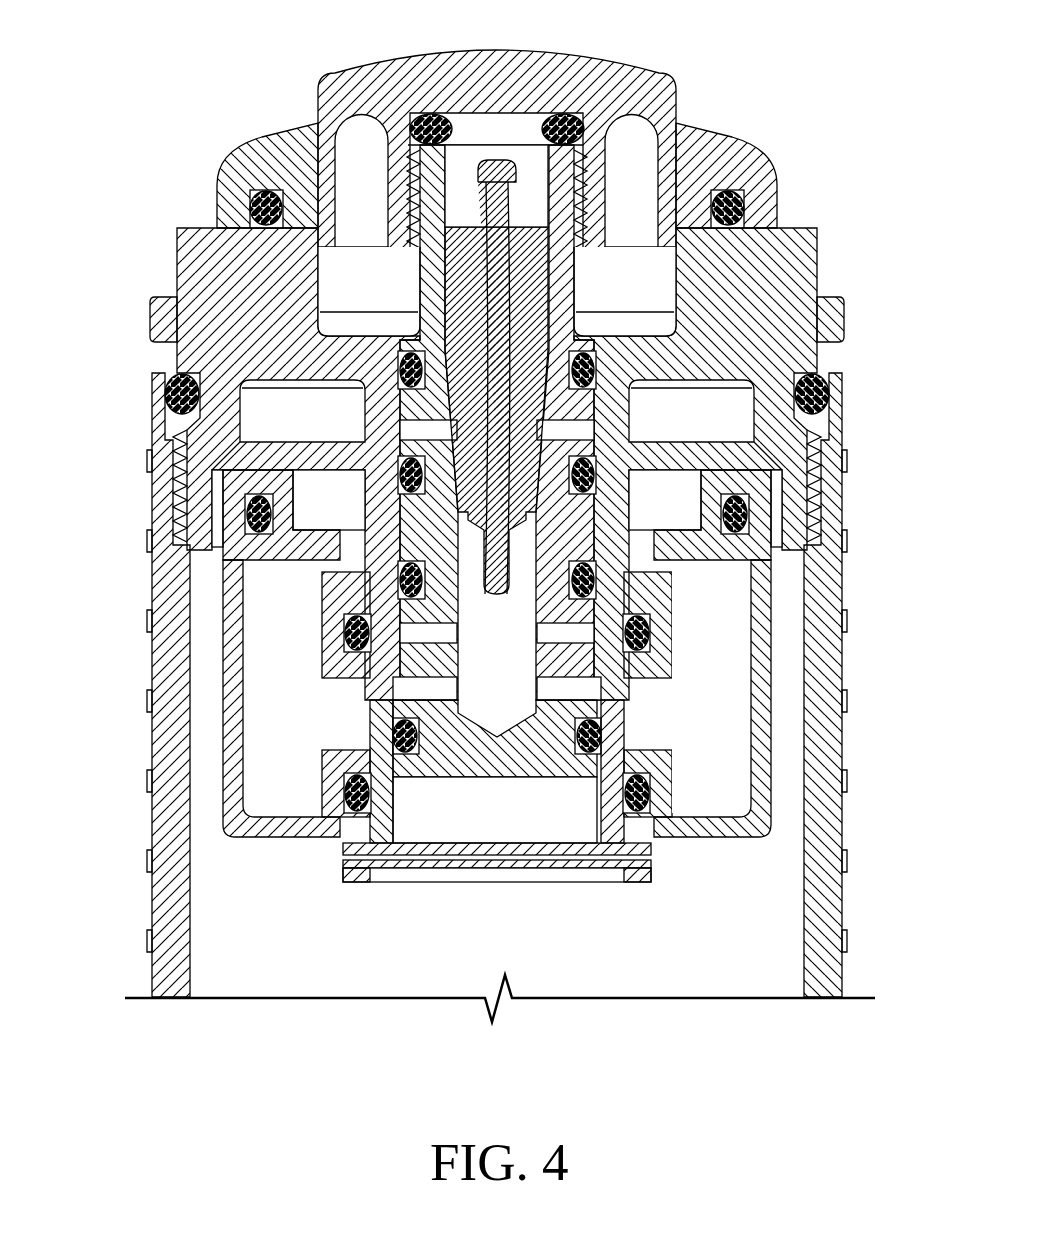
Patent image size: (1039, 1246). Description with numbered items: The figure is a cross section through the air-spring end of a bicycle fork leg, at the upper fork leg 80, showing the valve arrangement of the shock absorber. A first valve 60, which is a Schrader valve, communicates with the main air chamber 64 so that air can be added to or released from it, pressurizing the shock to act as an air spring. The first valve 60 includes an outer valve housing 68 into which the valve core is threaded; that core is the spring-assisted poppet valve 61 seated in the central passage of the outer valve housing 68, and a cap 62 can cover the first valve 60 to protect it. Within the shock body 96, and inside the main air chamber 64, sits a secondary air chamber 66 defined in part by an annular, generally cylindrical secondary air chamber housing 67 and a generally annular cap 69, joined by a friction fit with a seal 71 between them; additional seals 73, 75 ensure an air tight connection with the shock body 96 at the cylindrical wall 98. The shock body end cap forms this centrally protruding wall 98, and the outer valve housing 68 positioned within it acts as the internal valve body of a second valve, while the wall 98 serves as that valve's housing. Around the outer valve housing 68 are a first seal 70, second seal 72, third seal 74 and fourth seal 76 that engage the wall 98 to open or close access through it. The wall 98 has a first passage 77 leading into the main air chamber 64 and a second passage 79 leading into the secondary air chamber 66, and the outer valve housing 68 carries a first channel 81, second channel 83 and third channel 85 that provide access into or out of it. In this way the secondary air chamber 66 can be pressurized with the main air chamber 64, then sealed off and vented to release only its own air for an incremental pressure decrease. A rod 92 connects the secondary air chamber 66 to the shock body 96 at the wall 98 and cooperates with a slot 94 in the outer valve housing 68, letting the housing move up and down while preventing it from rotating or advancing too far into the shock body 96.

The first valve 60 is at (491, 133).
The poppet valve 61 is at (697, 200).
The cap 62 is at (640, 95).
The main air chamber 64 is at (326, 949).
The secondary air chamber 66 is at (737, 767).
The secondary air chamber housing 67 is at (760, 670).
The outer valve housing 68 is at (432, 298).
The annular cap 69 is at (257, 480).
The first seal 70 is at (658, 372).
The seal 71 is at (248, 520).
The second seal 72 is at (745, 432).
The seal 73 is at (398, 700).
The third seal 74 is at (770, 537).
The seal 75 is at (372, 692).
The fourth seal 76 is at (585, 738).
The first passage 77 is at (388, 580).
The second passage 79 is at (430, 735).
The upper fork leg 80 is at (165, 828).
The first channel 81 is at (420, 428).
The second channel 83 is at (425, 635).
The third channel 85 is at (443, 713).
The rod 92 is at (433, 865).
The slot 94 is at (552, 818).
The shock body 96 is at (152, 320).
The cylindrical wall 98 is at (392, 520).